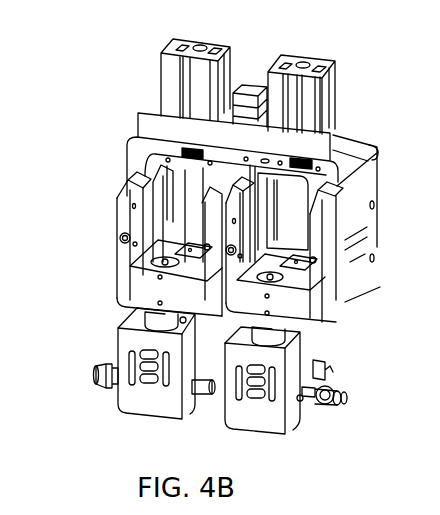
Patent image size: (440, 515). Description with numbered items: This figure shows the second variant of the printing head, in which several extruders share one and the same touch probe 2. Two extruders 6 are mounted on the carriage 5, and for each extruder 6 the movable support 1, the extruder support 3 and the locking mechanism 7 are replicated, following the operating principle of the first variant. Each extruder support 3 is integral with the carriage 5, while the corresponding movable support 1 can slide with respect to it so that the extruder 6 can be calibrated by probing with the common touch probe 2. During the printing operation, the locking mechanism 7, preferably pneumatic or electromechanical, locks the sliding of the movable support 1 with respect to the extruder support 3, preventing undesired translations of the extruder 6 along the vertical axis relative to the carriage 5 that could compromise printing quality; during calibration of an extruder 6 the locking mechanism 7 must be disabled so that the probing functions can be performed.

The movable support 1 is at (152, 192).
The touch probe 2 is at (254, 92).
The extruder support 3 is at (113, 277).
The carriage 5 is at (366, 284).
The extruder 6 is at (140, 338).
The locking mechanism 7 is at (175, 75).